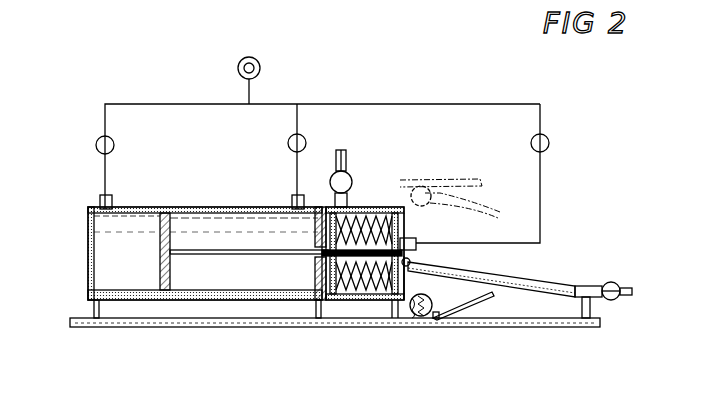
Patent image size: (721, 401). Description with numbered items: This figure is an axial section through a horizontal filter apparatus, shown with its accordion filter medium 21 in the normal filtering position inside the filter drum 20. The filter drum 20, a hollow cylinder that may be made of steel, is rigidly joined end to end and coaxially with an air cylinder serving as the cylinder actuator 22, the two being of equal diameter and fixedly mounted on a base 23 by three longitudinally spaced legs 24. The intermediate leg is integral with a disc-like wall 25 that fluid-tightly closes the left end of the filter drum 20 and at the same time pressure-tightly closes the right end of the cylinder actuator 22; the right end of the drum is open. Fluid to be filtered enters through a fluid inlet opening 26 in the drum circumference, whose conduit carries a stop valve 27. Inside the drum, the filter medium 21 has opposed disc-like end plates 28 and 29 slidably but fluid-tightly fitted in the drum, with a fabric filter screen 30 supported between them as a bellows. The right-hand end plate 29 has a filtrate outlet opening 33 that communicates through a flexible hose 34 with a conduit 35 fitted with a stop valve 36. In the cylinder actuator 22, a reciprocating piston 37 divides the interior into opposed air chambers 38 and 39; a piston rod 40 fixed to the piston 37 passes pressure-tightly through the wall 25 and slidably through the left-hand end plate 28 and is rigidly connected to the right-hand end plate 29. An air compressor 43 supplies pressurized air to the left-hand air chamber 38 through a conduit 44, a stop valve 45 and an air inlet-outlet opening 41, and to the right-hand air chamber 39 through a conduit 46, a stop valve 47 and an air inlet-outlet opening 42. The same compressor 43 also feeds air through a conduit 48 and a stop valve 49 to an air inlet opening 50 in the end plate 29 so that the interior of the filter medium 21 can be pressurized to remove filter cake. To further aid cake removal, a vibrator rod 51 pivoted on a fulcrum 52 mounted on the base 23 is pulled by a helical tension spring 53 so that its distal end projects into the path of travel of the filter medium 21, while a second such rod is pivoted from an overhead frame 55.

The filter drum 20 is at (346, 300).
The filter medium 21 is at (372, 300).
The cylinder actuator 22 is at (238, 300).
The base 23 is at (562, 327).
The legs 24 is at (94, 316).
The disc-like wall 25 is at (315, 300).
The fluid inlet opening 26 is at (350, 190).
The stop valve 27 is at (354, 174).
The end plate 28 is at (344, 300).
The end plate 29 is at (406, 225).
The filter screen 30 is at (382, 300).
The filtrate outlet opening 33 is at (406, 266).
The hose 34 is at (562, 284).
The conduit 35 is at (592, 286).
The stop valve 36 is at (616, 282).
The piston 37 is at (160, 292).
The air chamber 38 is at (128, 264).
The air chamber 39 is at (220, 243).
The piston rod 40 is at (192, 254).
The air inlet-outlet opening 41 is at (100, 198).
The air inlet-outlet opening 42 is at (292, 198).
The air compressor 43 is at (262, 68).
The conduit 44 is at (166, 100).
The stop valve 45 is at (96, 140).
The conduit 46 is at (302, 122).
The stop valve 47 is at (288, 136).
The conduit 48 is at (408, 100).
The stop valve 49 is at (548, 138).
The air inlet opening 50 is at (420, 250).
The vibrator rod 51 is at (560, 296).
The fulcrum 52 is at (450, 310).
The helical tension spring 53 is at (422, 312).
The overhead frame 55 is at (464, 181).